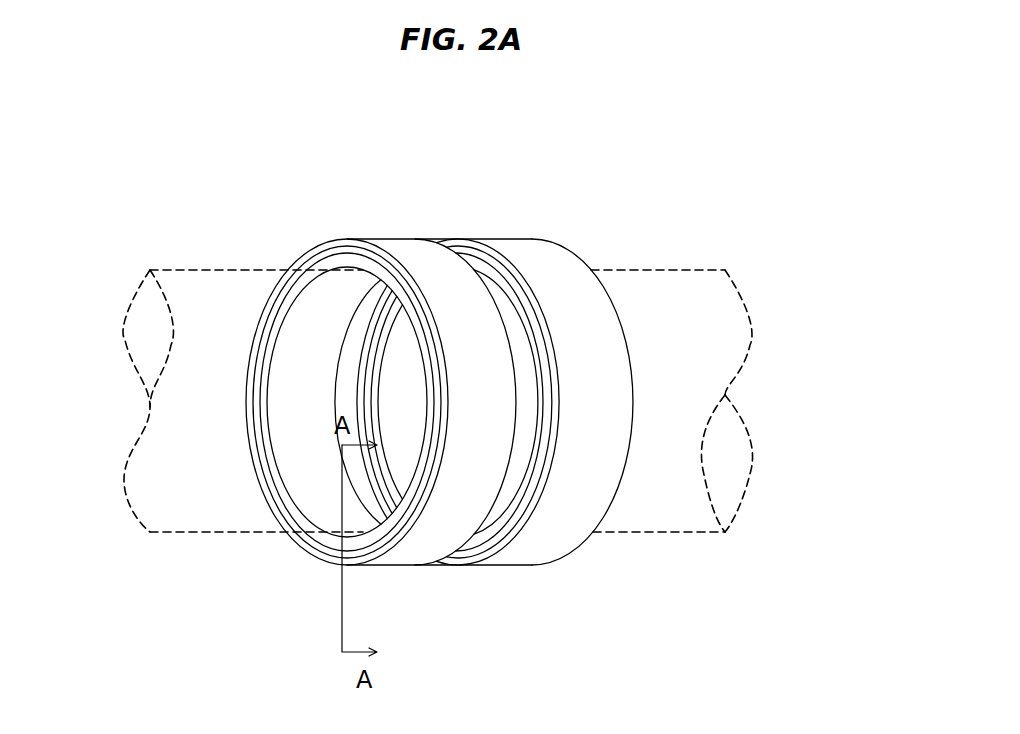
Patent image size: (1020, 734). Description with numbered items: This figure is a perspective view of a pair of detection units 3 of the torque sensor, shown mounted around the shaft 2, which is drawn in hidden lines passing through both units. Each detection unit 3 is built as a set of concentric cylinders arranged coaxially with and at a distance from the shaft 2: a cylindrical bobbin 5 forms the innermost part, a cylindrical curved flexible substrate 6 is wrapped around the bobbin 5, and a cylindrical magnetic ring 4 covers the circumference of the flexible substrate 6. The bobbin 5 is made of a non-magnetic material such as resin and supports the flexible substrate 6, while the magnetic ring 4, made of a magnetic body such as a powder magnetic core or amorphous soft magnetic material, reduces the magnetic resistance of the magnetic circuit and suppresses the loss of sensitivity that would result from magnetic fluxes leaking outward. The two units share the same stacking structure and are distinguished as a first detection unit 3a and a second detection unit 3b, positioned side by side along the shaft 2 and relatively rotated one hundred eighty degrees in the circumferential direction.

The shaft 2 is at (625, 283).
The detection unit 3 is at (439, 371).
The first detection unit 3a is at (389, 371).
The second detection unit 3b is at (547, 234).
The magnetic ring 4 is at (302, 255).
The bobbin 5 is at (325, 267).
The flexible substrate 6 is at (350, 253).